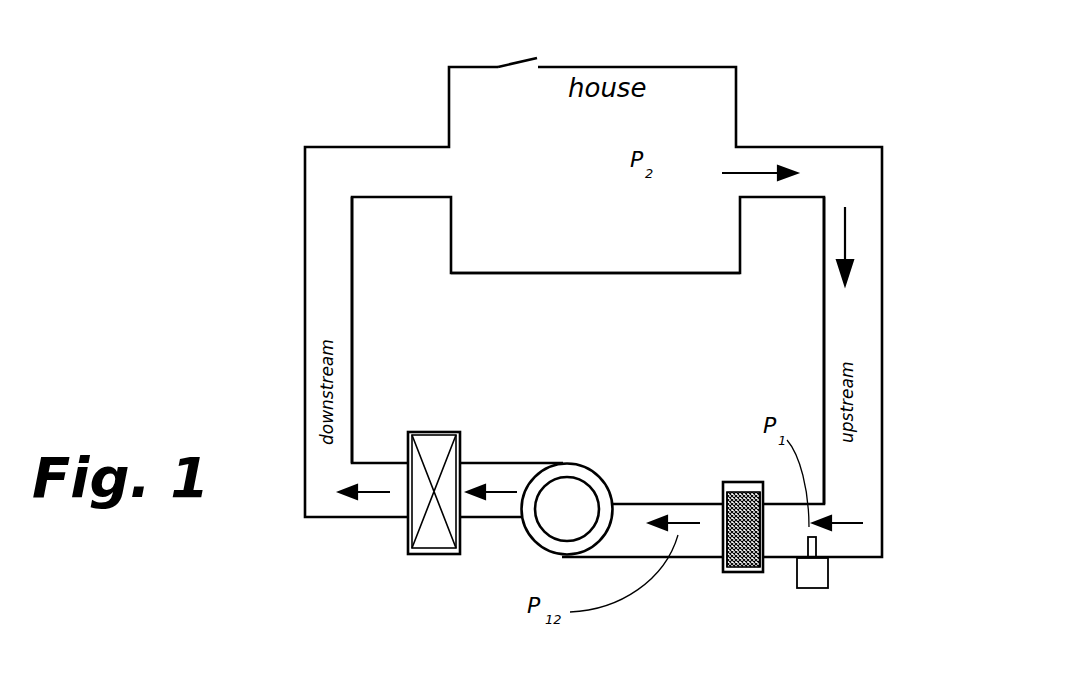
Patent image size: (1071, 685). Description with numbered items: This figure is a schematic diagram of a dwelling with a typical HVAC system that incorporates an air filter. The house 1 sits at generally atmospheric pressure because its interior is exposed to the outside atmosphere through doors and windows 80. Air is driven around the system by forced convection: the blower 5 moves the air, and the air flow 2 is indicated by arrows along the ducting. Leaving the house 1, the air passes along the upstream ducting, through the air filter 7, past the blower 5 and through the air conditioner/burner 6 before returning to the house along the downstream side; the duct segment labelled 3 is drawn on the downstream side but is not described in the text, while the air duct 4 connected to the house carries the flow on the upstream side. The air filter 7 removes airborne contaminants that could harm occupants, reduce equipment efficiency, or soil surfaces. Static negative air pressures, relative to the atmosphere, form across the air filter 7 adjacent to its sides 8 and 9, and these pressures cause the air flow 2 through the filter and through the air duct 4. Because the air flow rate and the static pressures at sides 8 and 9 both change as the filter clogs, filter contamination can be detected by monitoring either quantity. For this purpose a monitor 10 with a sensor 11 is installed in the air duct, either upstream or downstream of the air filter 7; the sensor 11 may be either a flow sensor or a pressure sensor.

The house 1 is at (583, 257).
The air flow 2 is at (852, 235).
The downstream duct section 3 is at (352, 341).
The air duct 4 is at (824, 301).
The blower 5 is at (570, 490).
The air conditioner/burner 6 is at (426, 443).
The air filter 7 is at (740, 490).
The side of the air filter 8 is at (727, 536).
The side of the air filter 9 is at (763, 540).
The monitor 10 is at (818, 575).
The sensor 11 is at (817, 545).
The doors and windows 80 is at (532, 50).